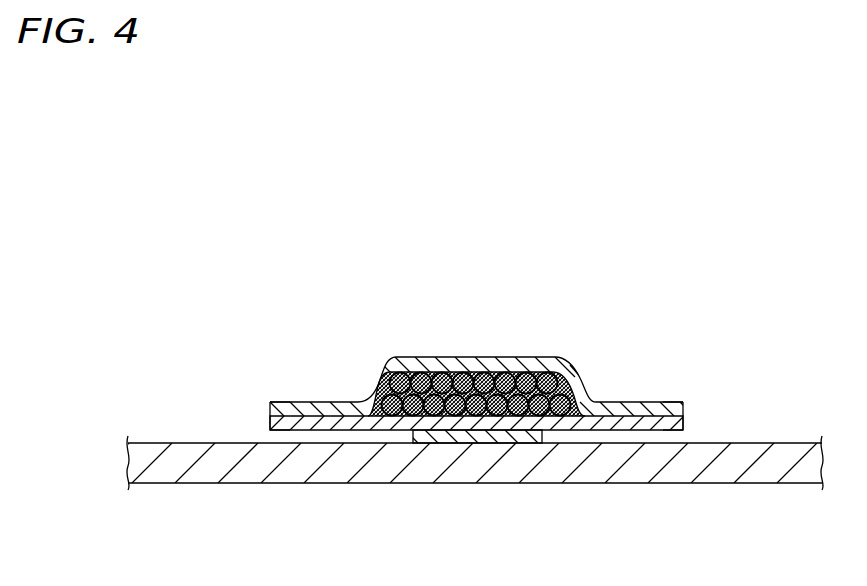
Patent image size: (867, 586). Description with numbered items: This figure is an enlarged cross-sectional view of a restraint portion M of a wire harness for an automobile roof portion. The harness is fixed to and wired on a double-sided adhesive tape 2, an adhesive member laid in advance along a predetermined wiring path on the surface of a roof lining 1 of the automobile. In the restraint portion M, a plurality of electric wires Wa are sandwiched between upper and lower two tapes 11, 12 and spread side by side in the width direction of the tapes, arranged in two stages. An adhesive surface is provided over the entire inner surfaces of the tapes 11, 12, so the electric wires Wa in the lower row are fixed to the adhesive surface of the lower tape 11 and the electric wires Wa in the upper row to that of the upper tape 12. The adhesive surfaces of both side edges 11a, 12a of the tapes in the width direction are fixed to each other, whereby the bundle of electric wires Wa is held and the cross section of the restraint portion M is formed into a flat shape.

The roof lining 1 is at (300, 470).
The double-sided adhesive tape 2 is at (447, 437).
The tape 11 is at (587, 400).
The side edge 11a is at (269, 424).
The tape 12 is at (513, 358).
The side edge 12a is at (281, 403).
The electric wires Wa is at (447, 393).
The restraint portion M is at (498, 319).